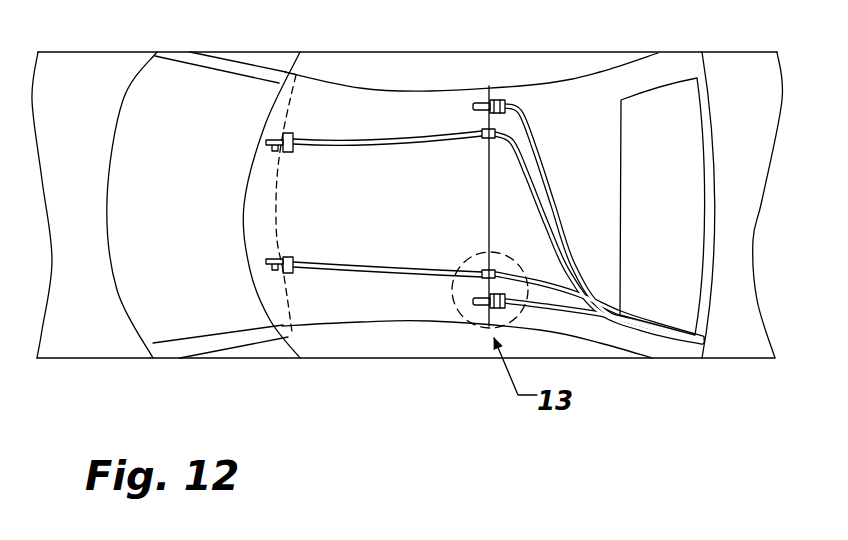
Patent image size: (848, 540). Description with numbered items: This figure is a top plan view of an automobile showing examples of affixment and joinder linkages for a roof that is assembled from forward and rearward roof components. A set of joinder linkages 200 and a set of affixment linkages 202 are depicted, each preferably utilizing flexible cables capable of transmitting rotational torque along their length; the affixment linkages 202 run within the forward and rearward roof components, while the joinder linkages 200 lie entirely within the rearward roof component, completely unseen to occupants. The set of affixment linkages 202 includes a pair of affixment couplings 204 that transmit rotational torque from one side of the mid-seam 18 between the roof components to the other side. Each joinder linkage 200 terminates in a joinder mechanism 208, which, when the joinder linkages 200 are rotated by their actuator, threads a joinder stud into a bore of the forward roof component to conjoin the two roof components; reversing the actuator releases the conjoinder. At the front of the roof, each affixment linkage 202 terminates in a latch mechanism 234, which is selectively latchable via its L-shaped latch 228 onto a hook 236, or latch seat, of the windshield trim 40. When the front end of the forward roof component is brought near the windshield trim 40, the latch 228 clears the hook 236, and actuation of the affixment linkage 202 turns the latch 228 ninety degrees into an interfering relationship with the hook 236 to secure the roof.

The mid-seam 18 is at (497, 165).
The windshield trim 40 is at (295, 101).
The joinder linkage 200 is at (542, 303).
The affixment linkage 202 is at (357, 148).
The affixment coupling 204 is at (482, 267).
The joinder mechanism 208 is at (506, 100).
The latch 228 is at (267, 141).
The latch mechanism 234 is at (288, 157).
The hook 236 is at (258, 168).